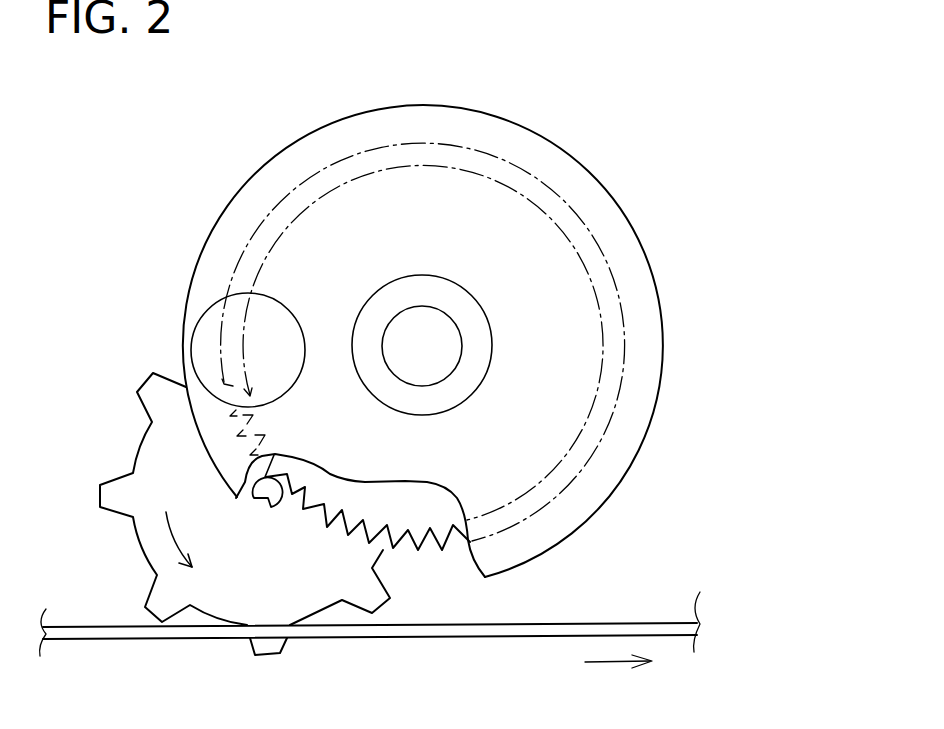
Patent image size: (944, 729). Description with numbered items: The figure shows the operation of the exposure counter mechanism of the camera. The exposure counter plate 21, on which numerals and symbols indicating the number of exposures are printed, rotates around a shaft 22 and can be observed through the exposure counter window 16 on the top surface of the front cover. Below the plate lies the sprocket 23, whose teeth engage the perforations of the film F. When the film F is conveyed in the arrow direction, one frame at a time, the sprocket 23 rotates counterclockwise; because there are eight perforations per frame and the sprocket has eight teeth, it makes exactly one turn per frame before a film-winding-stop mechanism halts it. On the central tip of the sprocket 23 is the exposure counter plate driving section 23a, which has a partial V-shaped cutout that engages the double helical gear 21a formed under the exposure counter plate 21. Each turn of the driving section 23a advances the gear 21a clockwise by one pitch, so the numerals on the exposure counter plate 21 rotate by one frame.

The exposure counter window 16 is at (208, 308).
The exposure counter plate 21 is at (533, 132).
The double helical gear 21a is at (318, 513).
The shaft 22 is at (462, 339).
The sprocket 23 is at (371, 614).
The exposure counter plate driving section 23a is at (258, 503).
The film F is at (480, 637).